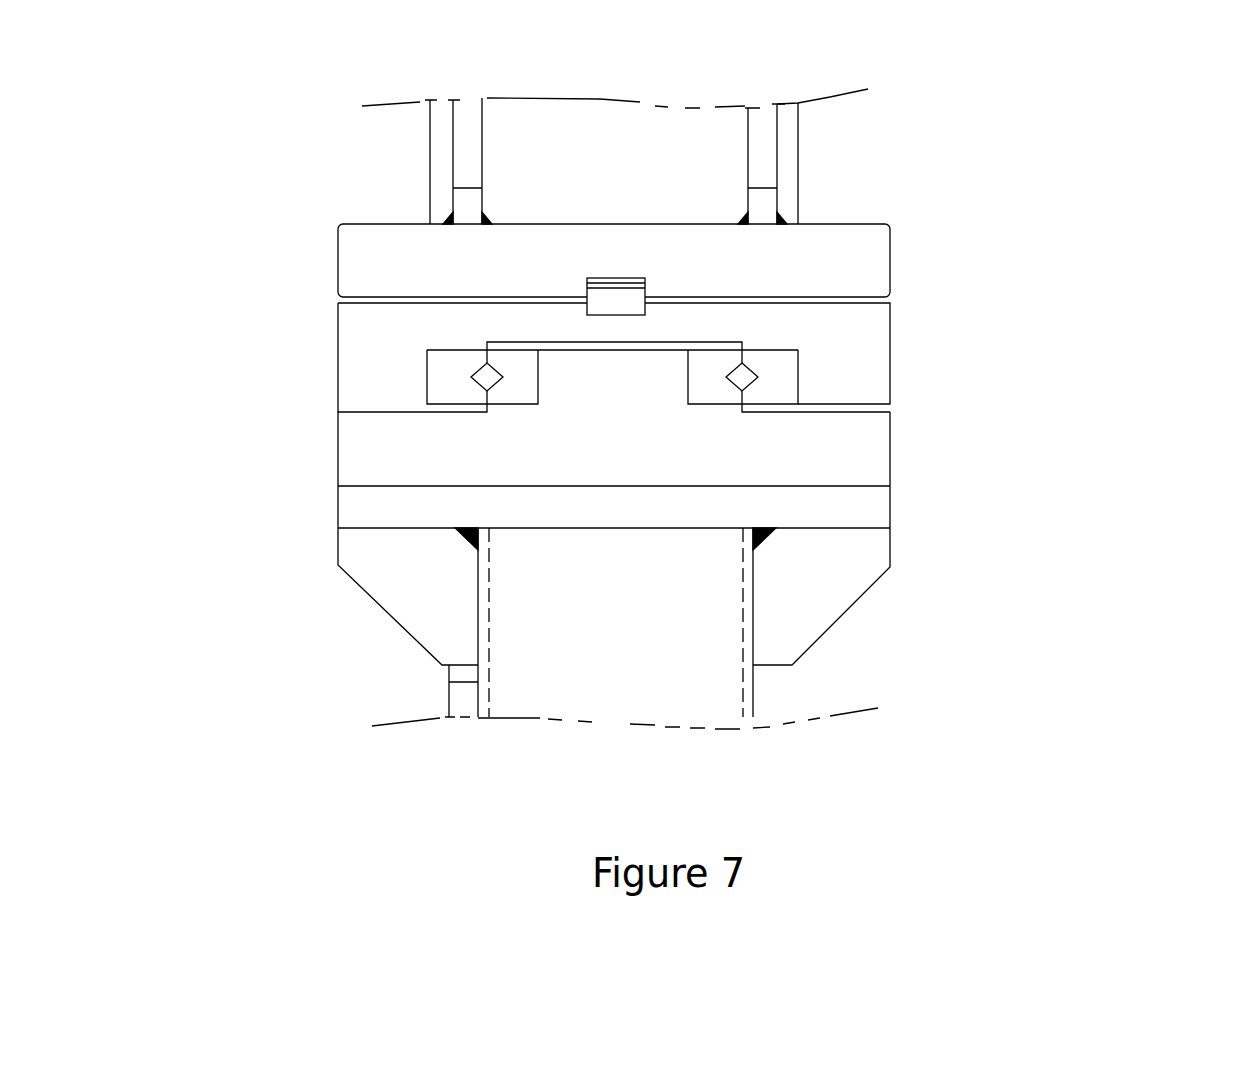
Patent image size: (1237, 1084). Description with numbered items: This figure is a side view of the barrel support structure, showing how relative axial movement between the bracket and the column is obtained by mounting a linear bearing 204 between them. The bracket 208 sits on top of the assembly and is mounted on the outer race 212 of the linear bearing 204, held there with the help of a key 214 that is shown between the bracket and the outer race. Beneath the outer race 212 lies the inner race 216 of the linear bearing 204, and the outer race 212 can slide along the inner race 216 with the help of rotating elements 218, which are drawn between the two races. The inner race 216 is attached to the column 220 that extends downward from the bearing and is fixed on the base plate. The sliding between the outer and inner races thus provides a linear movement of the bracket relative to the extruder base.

The linear bearing 204 is at (1048, 370).
The bracket 208 is at (453, 133).
The outer race 212 is at (885, 355).
The key 214 is at (597, 303).
The inner race 216 is at (885, 460).
The rotating elements 218 is at (471, 377).
The column 220 is at (478, 682).